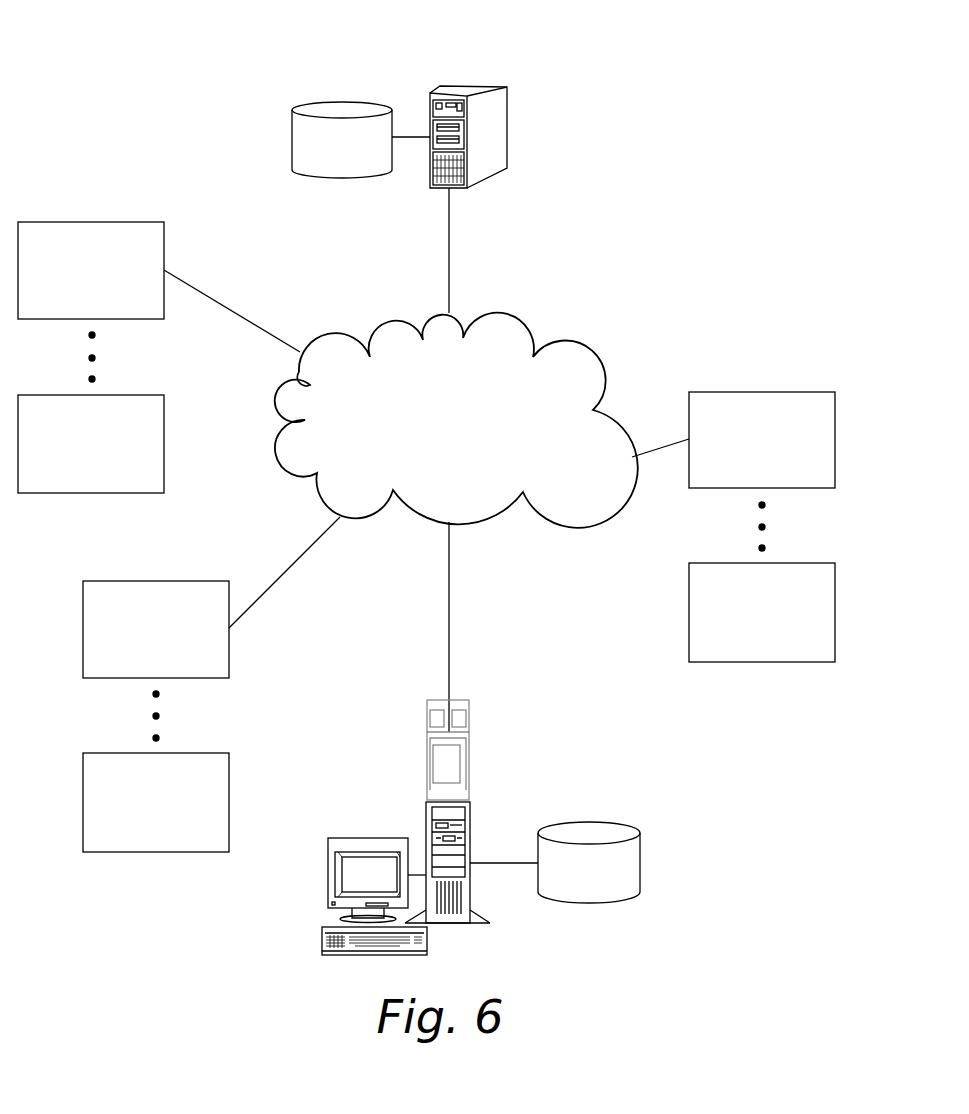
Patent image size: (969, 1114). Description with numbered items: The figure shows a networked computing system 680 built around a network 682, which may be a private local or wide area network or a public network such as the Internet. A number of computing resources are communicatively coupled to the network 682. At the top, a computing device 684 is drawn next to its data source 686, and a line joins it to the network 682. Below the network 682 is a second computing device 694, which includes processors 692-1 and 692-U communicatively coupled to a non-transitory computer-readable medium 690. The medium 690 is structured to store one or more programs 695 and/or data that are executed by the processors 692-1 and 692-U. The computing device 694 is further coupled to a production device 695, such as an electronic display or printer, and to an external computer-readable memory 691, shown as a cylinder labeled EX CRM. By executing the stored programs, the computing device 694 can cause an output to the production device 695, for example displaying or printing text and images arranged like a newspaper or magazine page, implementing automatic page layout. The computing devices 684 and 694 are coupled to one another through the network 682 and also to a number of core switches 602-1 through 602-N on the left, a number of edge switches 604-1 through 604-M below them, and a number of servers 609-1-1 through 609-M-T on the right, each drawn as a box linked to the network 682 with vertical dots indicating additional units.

The computing system 680 is at (138, 56).
The data source 686 is at (343, 101).
The computing device 684 is at (510, 131).
The network 682 is at (590, 343).
The core switch 602-1 is at (118, 220).
The core switch 602-N is at (118, 394).
The edge switch 604-1 is at (183, 579).
The edge switch 604-M is at (183, 752).
The server 609-1-1 is at (784, 390).
The server 609-M-T is at (784, 562).
The processor 692-1 is at (428, 719).
The processor 692-U is at (470, 719).
The non-transitory computer-readable medium 690 is at (428, 749).
The programs / production device 695 is at (432, 771).
The computing device 694 is at (450, 750).
The external computer-readable memory 691 is at (589, 828).